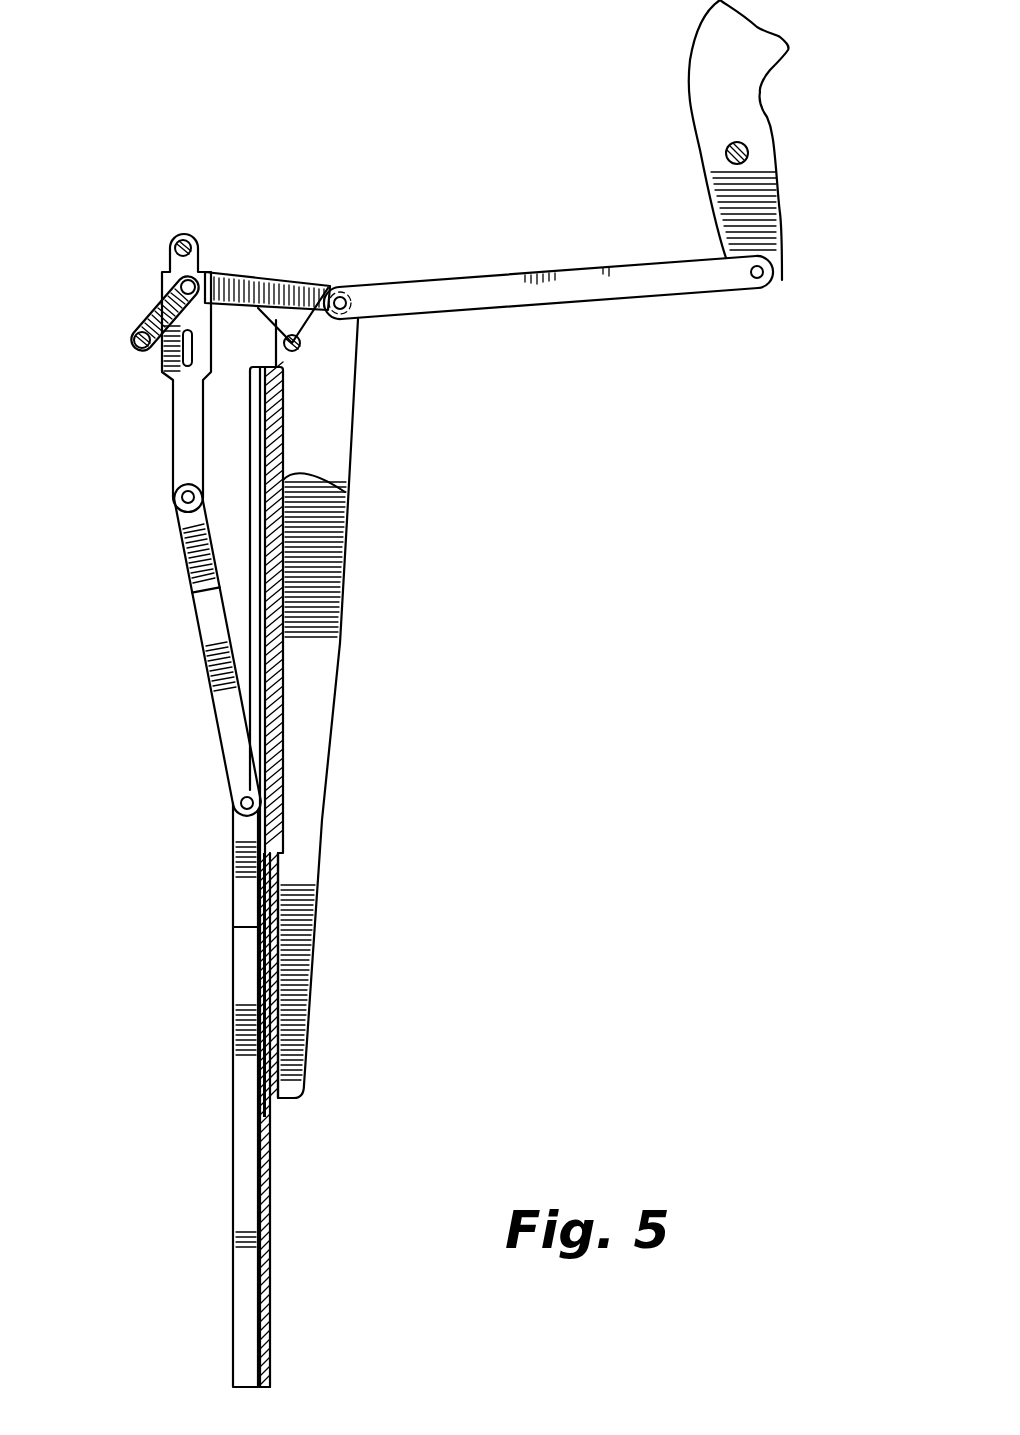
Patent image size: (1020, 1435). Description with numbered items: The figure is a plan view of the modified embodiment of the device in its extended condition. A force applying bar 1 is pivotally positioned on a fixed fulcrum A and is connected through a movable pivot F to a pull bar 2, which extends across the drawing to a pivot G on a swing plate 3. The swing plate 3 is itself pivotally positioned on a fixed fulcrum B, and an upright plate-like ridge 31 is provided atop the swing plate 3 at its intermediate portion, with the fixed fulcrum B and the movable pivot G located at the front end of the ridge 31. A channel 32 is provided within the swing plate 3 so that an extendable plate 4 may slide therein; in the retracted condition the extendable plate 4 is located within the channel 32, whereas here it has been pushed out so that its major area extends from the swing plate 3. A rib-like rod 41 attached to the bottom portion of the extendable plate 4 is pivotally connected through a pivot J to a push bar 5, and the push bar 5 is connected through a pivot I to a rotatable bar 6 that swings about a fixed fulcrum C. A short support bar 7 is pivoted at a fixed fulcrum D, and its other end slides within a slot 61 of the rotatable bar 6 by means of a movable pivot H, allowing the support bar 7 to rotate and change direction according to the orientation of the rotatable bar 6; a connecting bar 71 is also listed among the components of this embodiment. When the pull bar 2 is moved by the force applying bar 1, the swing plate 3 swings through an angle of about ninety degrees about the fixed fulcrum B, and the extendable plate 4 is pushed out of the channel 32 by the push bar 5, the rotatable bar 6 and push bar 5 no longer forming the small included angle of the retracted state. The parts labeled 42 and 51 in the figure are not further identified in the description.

The force applying bar 1 is at (695, 70).
The pull bar 2 is at (530, 273).
The swing plate 3 is at (320, 636).
The plate-like ridge 31 is at (345, 390).
The channel 32 is at (347, 492).
The extendable plate 4 is at (265, 1217).
The rib-like rod 41 is at (247, 1123).
The slider strip 42 is at (242, 882).
The push bar 5 is at (206, 712).
The upper link portion 51 is at (182, 538).
The rotatable bar 6 is at (172, 432).
The slot 61 is at (187, 336).
The support bar 7 is at (150, 310).
The connecting bar 71 is at (297, 285).
The fixed fulcrum A is at (748, 158).
The fixed fulcrum B is at (278, 304).
The fixed fulcrum C is at (195, 240).
The fixed fulcrum D is at (133, 339).
The movable pivot F is at (775, 279).
The movable pivot G is at (340, 289).
The movable pivot H is at (170, 270).
The pivot I is at (181, 498).
The pivot J is at (242, 803).